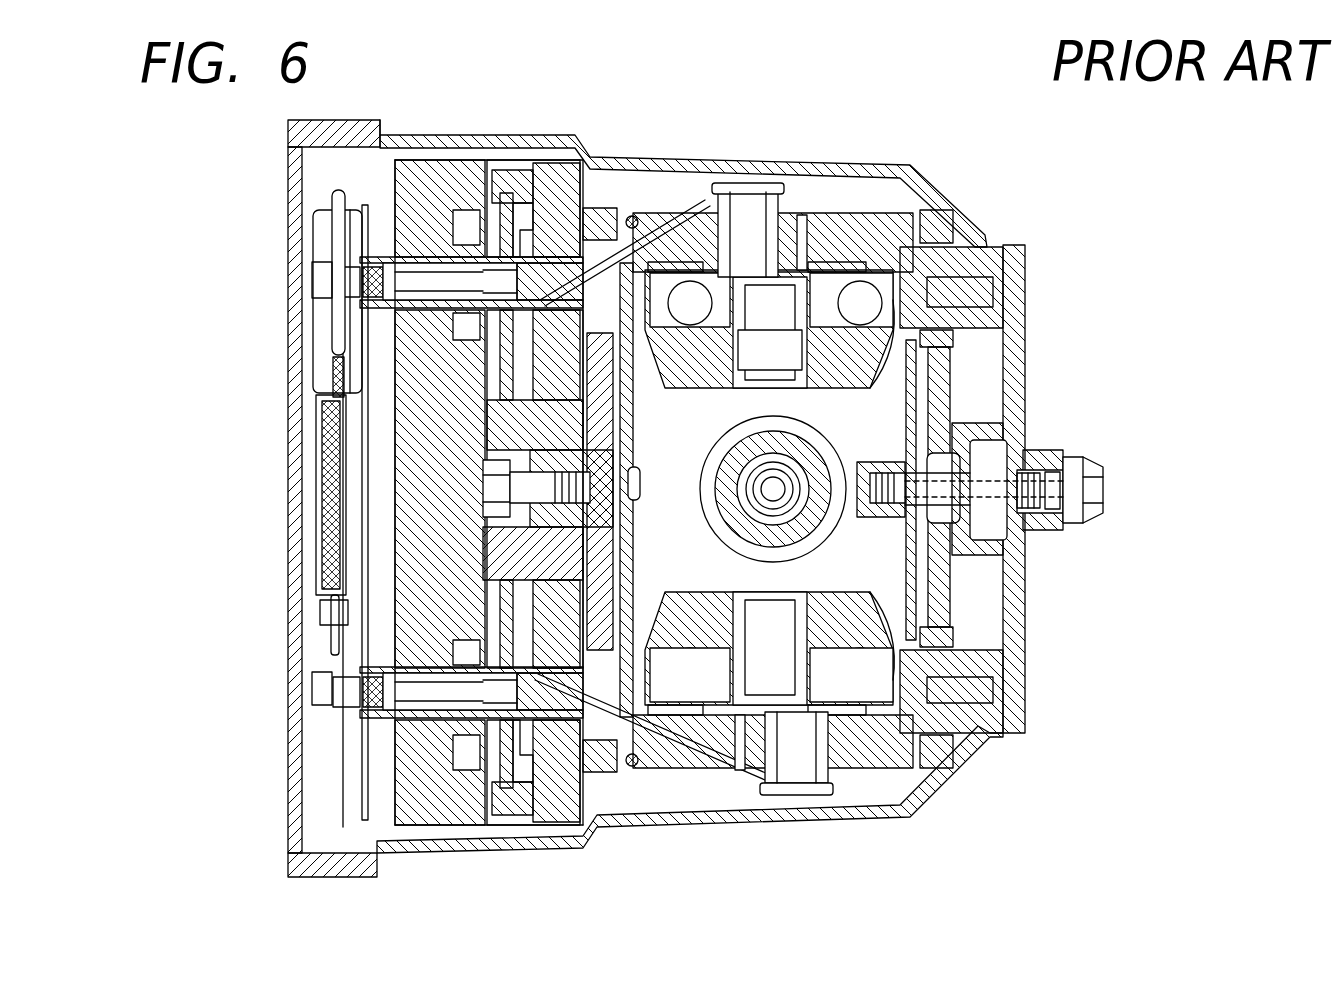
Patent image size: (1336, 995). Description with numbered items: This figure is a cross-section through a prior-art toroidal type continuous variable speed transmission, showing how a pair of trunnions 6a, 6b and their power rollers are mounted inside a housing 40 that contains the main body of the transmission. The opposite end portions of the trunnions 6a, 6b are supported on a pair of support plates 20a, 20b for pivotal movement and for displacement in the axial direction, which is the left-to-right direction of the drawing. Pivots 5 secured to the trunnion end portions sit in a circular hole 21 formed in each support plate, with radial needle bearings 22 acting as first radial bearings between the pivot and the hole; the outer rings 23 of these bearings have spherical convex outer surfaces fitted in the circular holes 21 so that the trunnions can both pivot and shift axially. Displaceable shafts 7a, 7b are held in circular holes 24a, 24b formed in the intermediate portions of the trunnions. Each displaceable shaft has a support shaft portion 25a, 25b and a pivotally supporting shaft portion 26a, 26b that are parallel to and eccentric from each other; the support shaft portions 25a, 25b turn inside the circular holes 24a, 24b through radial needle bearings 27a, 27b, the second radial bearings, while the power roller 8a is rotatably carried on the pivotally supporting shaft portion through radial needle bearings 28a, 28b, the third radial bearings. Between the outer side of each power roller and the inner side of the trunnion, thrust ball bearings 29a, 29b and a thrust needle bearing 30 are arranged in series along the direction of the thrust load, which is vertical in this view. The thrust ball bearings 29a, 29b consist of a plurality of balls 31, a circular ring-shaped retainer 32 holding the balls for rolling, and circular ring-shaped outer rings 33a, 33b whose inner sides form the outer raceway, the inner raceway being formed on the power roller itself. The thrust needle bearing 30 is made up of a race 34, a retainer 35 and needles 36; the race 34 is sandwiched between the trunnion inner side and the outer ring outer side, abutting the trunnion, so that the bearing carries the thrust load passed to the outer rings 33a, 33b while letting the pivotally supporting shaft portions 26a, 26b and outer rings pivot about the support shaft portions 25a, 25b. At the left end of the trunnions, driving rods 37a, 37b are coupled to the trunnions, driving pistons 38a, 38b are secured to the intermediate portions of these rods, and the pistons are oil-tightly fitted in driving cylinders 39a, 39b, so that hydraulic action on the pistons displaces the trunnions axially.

The pivot 5 is at (580, 215).
The trunnion 6a is at (960, 200).
The trunnion 6b is at (905, 770).
The displaceable shaft 7a is at (790, 220).
The displaceable shaft 7b is at (765, 745).
The power roller 8a is at (1003, 382).
The support plate 20a is at (628, 530).
The support plate 20b is at (945, 570).
The circular hole 21 is at (600, 225).
The radial needle bearing 22 is at (640, 462).
The outer ring 23 is at (527, 180).
The circular hole 24a is at (800, 230).
The circular hole 24b is at (738, 735).
The support shaft portion 25a is at (745, 210).
The support shaft portion 25b is at (795, 775).
The pivotally supporting shaft portion 26a is at (780, 390).
The pivotally supporting shaft portion 26b is at (790, 600).
The radial needle bearing 27a is at (770, 245).
The radial needle bearing 27b is at (810, 755).
The radial needle bearing 28a is at (720, 380).
The radial needle bearing 28b is at (700, 610).
The thrust ball bearing 29a is at (870, 320).
The thrust ball bearing 29b is at (870, 640).
The thrust needle bearing 30 is at (850, 240).
The ball 31 is at (680, 322).
The retainer 32 is at (700, 350).
The outer ring 33a is at (915, 240).
The outer ring 33b is at (880, 760).
The race 34 is at (660, 240).
The retainer 35 is at (690, 240).
The needle 36 is at (633, 222).
The driving rod 37a is at (430, 290).
The driving rod 37b is at (430, 692).
The driving piston 38a is at (520, 190).
The driving piston 38b is at (500, 800).
The driving cylinder 39a is at (470, 180).
The driving cylinder 39b is at (520, 800).
The housing 40 is at (975, 215).